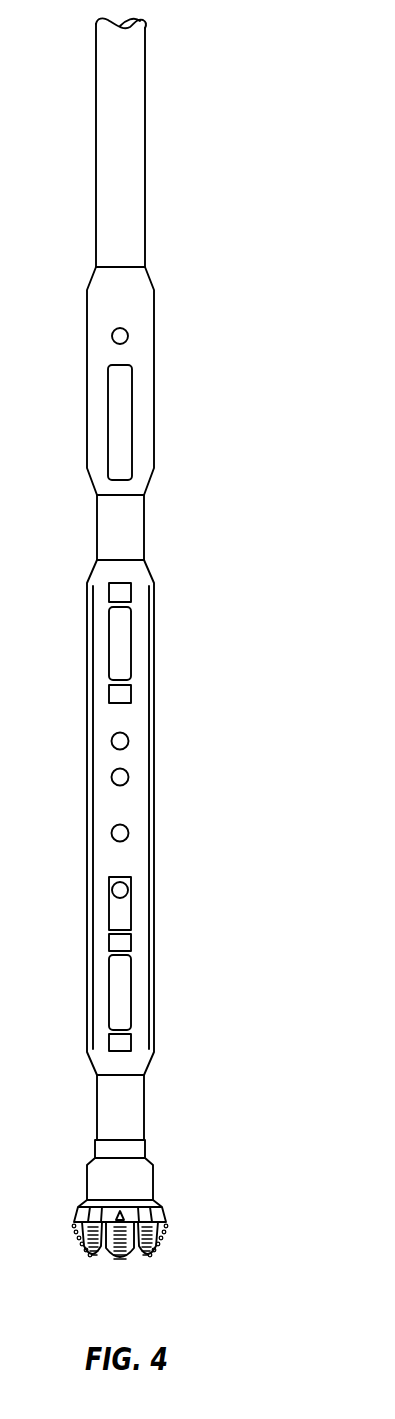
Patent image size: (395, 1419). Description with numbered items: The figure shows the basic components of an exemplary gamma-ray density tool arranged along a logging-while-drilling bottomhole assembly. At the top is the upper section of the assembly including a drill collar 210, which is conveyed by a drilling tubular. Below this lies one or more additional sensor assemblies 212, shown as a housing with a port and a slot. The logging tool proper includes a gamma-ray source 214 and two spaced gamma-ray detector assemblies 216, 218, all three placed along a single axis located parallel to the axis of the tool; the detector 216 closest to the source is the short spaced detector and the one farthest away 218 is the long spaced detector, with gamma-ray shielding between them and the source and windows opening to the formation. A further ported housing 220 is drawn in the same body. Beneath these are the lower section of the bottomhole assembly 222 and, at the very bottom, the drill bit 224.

The drill collar 210 is at (153, 67).
The additional sensor assemblies 212 is at (155, 387).
The gamma-ray source 214 is at (138, 741).
The short spaced detector 216 is at (138, 777).
The long spaced detector 218 is at (138, 833).
The instrument housing with port 220 is at (138, 890).
The lower section of the bottomhole assembly 222 is at (145, 1115).
The drill bit 224 is at (178, 1214).